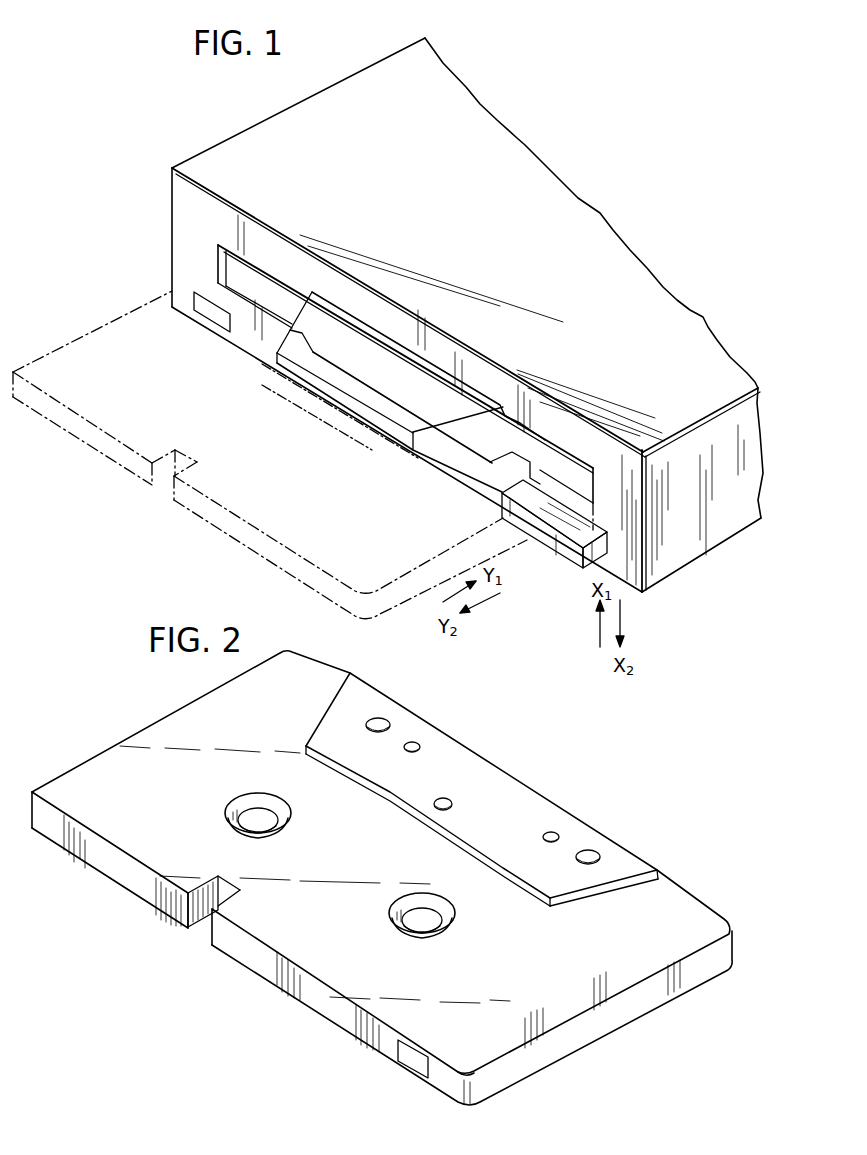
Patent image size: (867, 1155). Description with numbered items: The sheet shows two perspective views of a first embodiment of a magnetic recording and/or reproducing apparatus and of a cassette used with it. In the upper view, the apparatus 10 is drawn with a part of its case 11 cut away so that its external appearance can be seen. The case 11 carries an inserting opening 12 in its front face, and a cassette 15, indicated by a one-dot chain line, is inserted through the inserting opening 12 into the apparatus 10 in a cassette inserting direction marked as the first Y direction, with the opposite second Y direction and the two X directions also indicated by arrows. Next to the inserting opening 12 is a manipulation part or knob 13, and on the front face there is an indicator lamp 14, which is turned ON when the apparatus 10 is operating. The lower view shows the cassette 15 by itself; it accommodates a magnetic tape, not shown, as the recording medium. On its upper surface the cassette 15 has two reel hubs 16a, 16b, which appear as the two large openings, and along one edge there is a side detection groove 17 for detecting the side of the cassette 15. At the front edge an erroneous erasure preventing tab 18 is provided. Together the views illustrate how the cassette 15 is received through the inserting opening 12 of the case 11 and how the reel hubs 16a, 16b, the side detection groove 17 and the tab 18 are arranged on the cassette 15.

In FIG. 1, the magnetic recording and/or reproducing apparatus 10 is at (299, 90).
In FIG. 1, the case 11 is at (237, 143).
In FIG. 1, the inserting opening 12 is at (337, 320).
In FIG. 1, the manipulation part 13 is at (540, 545).
In FIG. 1, the indicator lamp 14 is at (193, 293).
In FIG. 1, the cassette 15 is at (197, 513).
In FIG. 2, the cassette 15 is at (523, 744).
In FIG. 2, the reel hub 16a is at (427, 930).
In FIG. 2, the reel hub 16b is at (233, 804).
In FIG. 2, the side detection groove 17 is at (205, 923).
In FIG. 2, the erroneous erasure preventing tab 18 is at (417, 1058).